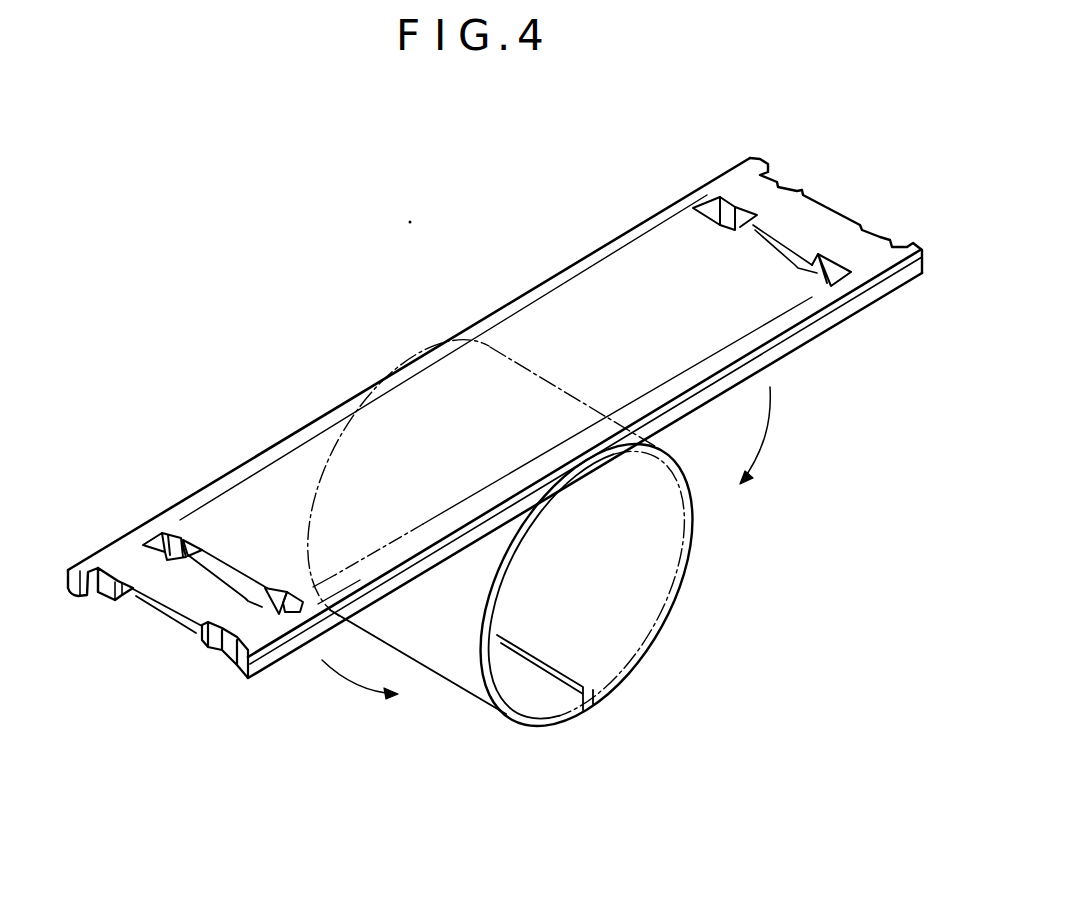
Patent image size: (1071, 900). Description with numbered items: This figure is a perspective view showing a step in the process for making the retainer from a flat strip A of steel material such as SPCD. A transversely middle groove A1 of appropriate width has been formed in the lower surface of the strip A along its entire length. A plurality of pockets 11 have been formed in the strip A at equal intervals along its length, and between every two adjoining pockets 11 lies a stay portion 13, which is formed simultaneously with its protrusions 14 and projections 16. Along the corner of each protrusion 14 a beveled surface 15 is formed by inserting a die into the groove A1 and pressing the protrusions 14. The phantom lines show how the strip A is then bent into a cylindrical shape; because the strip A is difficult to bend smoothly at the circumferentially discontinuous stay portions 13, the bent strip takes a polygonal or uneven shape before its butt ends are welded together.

The strip A is at (452, 313).
The transversely middle groove A1 is at (207, 645).
The pocket 11 is at (712, 211).
The stay portion 13 is at (192, 597).
The protrusion 14 is at (220, 585).
The beveled surface 15 is at (277, 598).
The projection 16 is at (173, 527).